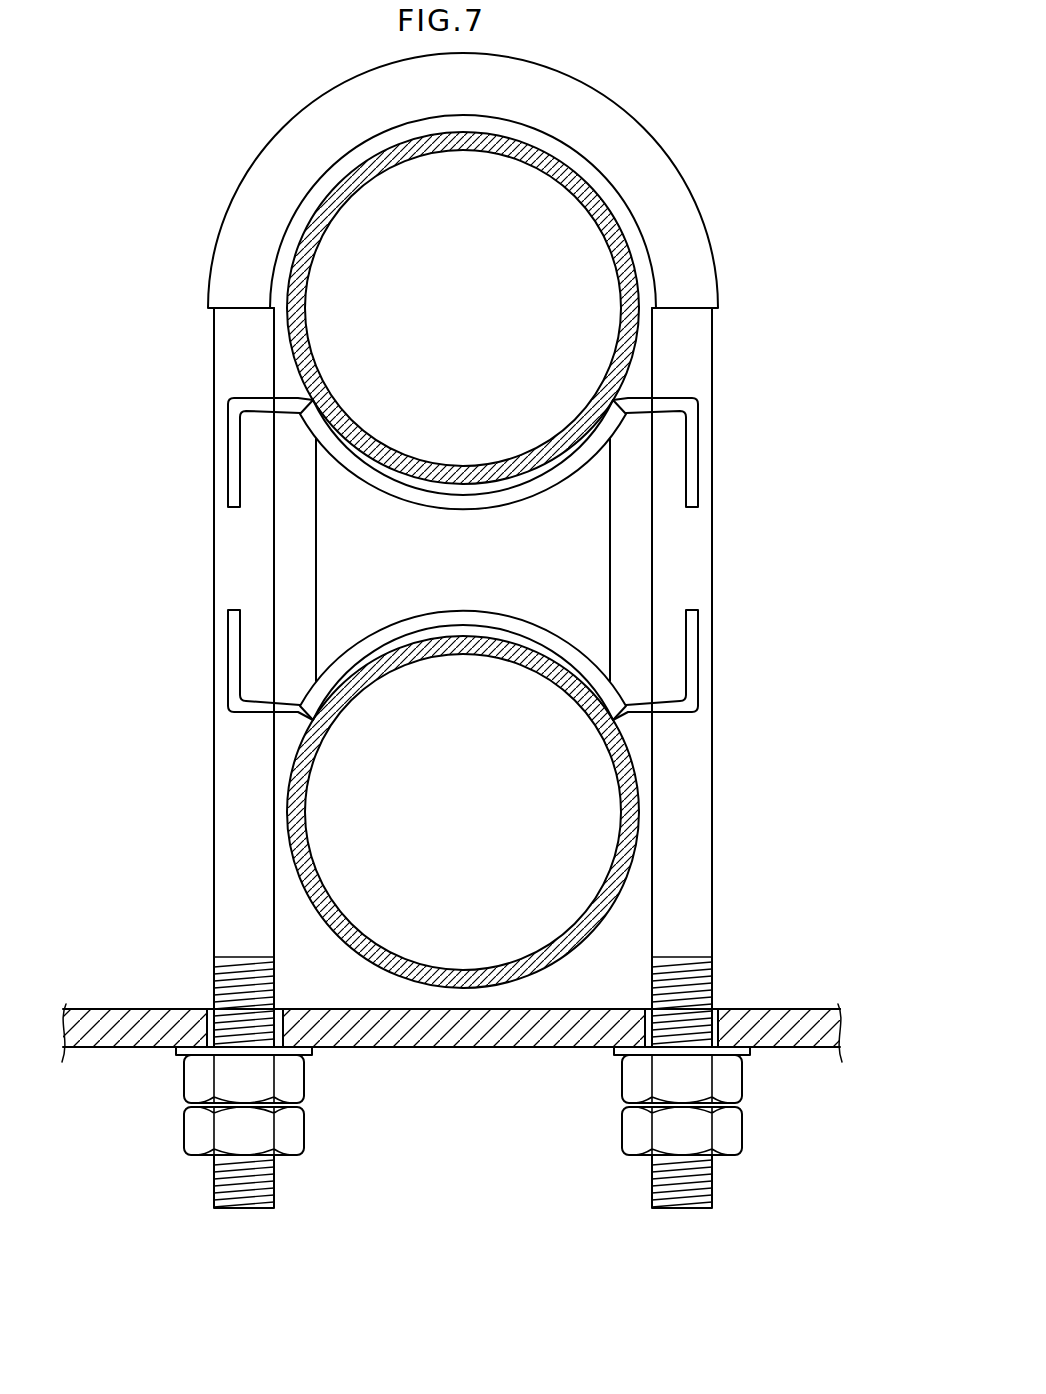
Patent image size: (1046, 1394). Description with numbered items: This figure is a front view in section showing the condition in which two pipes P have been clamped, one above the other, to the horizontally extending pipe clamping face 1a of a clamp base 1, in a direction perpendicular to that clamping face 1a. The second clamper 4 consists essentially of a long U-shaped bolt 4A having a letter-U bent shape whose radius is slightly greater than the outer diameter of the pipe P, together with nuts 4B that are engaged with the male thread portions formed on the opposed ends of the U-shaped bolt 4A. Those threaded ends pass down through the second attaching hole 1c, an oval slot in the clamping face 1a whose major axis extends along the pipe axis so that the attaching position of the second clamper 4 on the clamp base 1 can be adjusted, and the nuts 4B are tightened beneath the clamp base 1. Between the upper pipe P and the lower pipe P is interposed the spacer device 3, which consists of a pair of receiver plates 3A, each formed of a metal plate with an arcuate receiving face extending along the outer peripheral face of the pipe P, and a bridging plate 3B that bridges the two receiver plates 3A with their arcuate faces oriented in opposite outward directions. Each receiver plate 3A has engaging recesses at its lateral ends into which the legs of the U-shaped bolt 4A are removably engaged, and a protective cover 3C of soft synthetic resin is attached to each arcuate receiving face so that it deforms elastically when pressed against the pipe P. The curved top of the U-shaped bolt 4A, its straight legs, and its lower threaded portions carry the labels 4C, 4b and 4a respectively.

The clamp base 1 is at (452, 1043).
The pipe clamping face 1a is at (778, 1010).
The second attaching hole 1c is at (217, 1031).
The spacer device 3 is at (530, 559).
The receiver plate 3A is at (692, 456).
The bridging plate 3B is at (598, 540).
The protective cover 3C is at (410, 493).
The second clamper 4 is at (468, 630).
The U-shaped bolt 4A is at (468, 677).
The threaded ends of U-bolt 4a is at (274, 1170).
The nuts 4B is at (184, 1122).
The straight portions of U-bolt legs 4b is at (214, 785).
The curved portion of U-bolt 4C is at (682, 222).
The pipe P is at (313, 253).